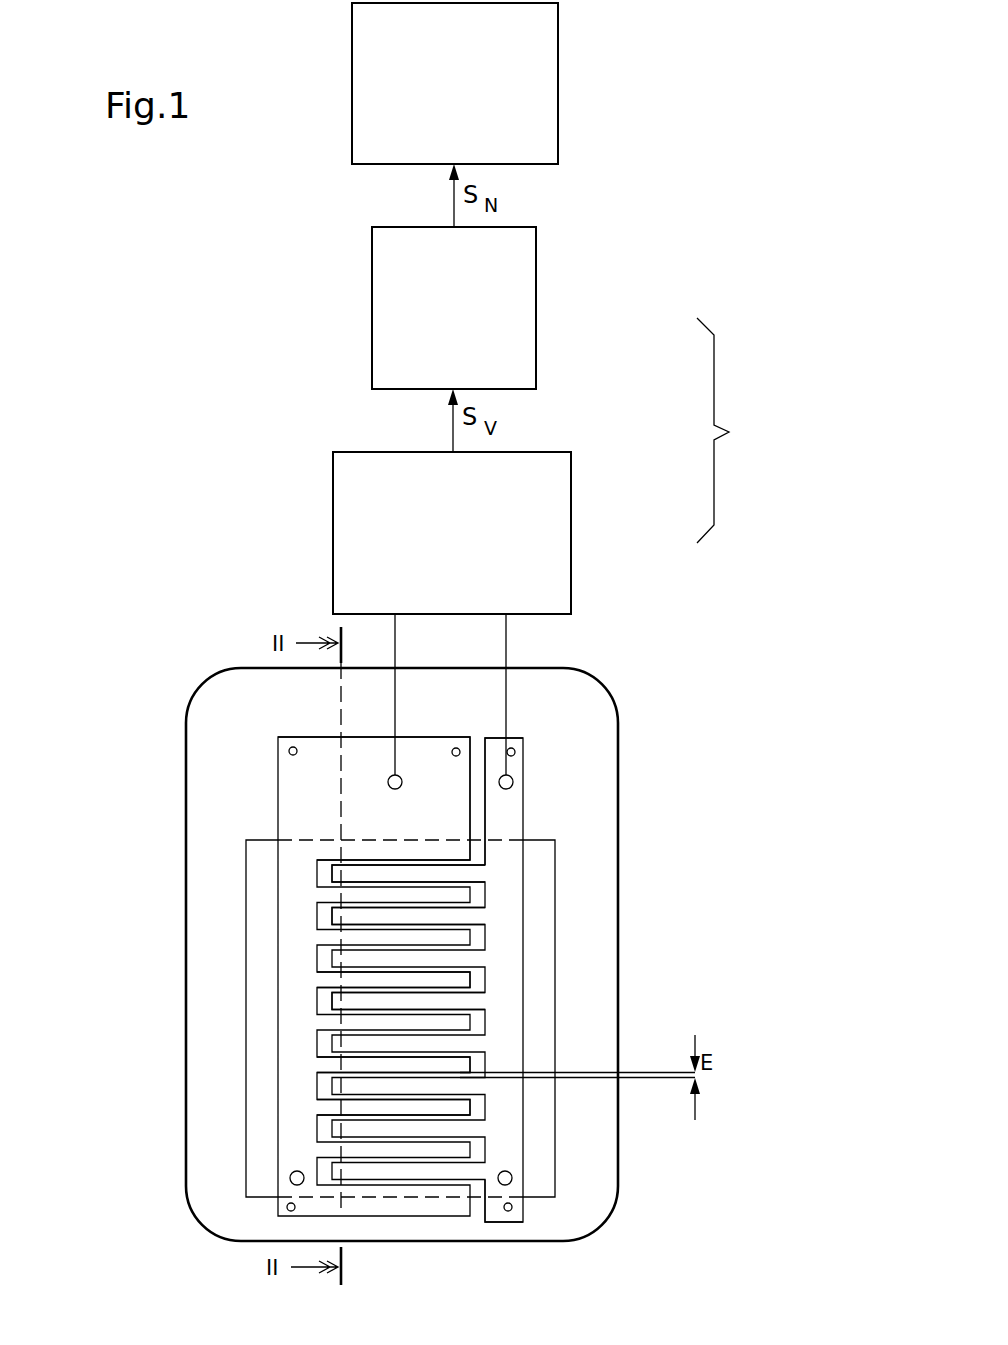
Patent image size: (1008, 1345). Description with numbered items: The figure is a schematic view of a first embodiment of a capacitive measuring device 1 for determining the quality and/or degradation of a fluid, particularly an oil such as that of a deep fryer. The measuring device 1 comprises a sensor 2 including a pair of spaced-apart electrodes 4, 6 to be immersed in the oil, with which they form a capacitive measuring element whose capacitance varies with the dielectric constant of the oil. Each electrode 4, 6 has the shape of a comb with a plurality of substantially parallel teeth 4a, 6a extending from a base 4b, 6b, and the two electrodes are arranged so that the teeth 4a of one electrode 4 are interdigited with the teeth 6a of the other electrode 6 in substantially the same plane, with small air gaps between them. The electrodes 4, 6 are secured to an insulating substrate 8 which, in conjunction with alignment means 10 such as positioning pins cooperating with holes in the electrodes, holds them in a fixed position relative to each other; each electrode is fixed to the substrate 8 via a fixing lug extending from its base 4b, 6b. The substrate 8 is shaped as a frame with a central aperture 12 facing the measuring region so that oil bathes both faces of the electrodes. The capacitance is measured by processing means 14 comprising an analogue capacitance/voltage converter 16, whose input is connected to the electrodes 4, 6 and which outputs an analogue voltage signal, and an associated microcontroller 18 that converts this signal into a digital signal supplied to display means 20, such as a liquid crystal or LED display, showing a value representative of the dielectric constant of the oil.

The measuring device 1 is at (74, 389).
The sensor 2 is at (196, 688).
The electrode 4 is at (270, 800).
The teeth 4a is at (352, 1110).
The base 4b is at (293, 818).
The electrode 6 is at (533, 831).
The teeth 6a is at (457, 1003).
The base 6b is at (515, 807).
The insulating substrate 8 is at (602, 713).
The alignment means 10 is at (290, 747).
The central aperture 12 is at (264, 946).
The processing means 14 is at (730, 430).
The capacitance/voltage converter 16 is at (571, 533).
The microcontroller 18 is at (536, 309).
The display means 20 is at (558, 84).